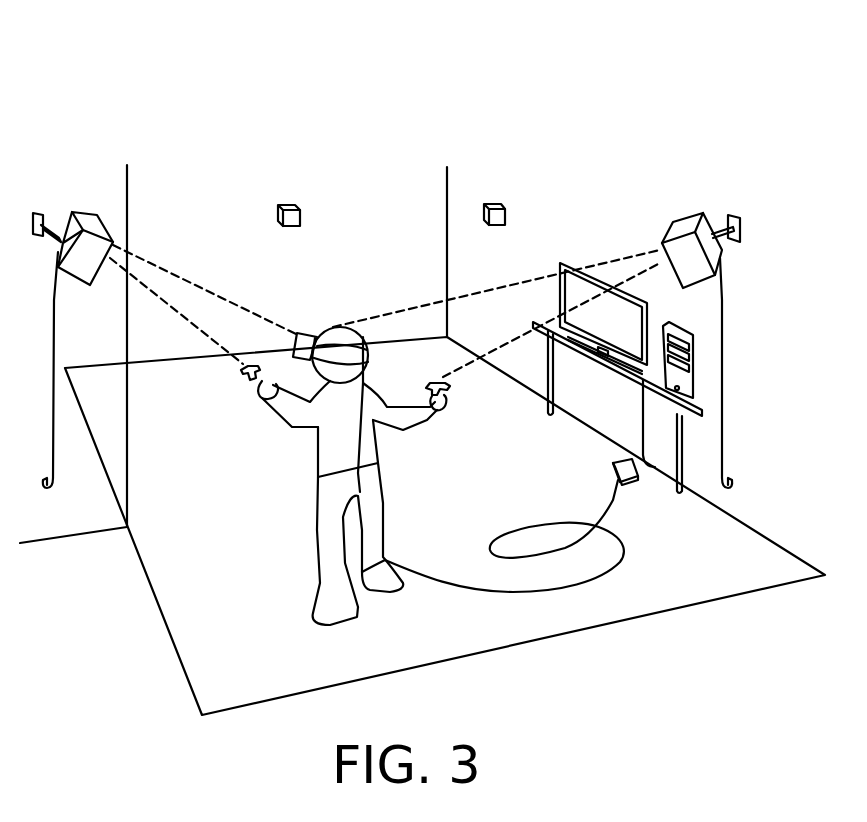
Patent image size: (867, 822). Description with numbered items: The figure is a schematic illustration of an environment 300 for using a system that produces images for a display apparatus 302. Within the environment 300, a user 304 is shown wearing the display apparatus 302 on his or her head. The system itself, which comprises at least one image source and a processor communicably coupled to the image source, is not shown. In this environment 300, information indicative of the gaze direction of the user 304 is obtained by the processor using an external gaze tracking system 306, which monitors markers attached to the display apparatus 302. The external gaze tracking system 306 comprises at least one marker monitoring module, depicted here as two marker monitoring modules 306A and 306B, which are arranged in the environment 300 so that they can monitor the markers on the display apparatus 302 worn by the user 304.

The environment 300 is at (680, 65).
The display apparatus 302 is at (309, 338).
The user 304 is at (318, 577).
The external gaze tracking system 306 is at (438, 98).
The marker monitoring module 306A is at (289, 202).
The marker monitoring module 306B is at (497, 203).